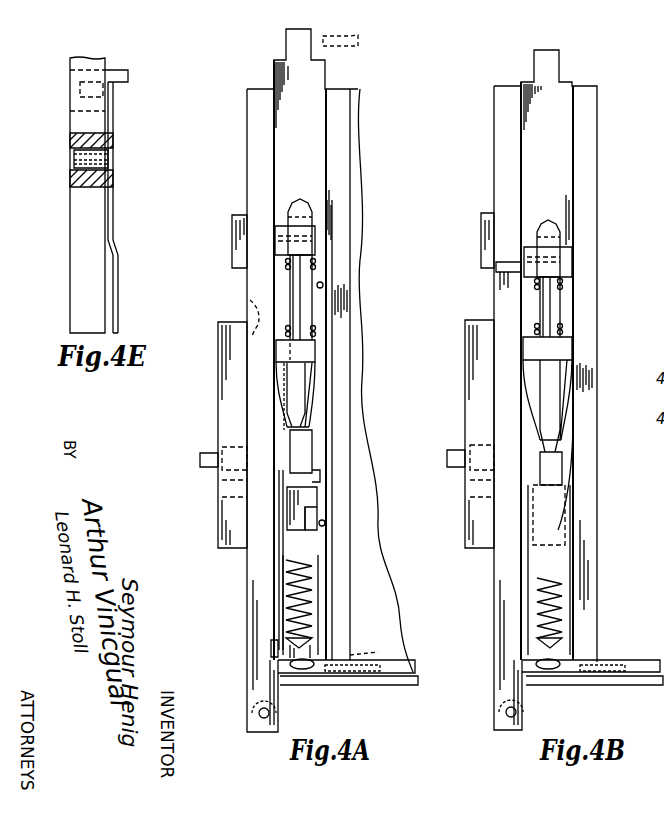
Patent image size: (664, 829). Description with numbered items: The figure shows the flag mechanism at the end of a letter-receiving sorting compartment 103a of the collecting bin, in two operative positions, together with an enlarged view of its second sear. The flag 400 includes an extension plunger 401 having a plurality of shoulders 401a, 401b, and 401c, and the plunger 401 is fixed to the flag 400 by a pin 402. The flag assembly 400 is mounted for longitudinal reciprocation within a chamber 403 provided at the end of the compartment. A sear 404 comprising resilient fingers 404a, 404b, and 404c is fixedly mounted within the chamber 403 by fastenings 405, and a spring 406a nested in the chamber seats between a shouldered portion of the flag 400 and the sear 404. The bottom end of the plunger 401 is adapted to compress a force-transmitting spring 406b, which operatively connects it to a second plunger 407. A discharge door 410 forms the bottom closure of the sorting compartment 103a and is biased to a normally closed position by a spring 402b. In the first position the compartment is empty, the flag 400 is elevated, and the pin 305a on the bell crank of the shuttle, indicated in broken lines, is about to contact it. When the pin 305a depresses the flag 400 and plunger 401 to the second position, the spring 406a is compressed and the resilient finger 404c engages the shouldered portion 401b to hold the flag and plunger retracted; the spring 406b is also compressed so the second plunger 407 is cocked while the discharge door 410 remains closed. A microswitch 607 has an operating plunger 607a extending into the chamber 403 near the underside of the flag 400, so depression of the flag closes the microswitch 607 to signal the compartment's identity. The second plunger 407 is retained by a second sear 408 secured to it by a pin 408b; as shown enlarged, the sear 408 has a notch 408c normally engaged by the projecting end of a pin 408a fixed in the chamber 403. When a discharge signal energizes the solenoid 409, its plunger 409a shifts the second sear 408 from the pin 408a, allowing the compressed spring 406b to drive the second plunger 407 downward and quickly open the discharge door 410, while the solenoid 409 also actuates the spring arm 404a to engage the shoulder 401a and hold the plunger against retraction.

In FIG. 4A, the sorting compartment 103a is at (386, 604).
In FIG. 4A, the pin 305a is at (338, 36).
In FIG. 4A, the flag 400 is at (276, 68).
In FIG. 4B, the flag 400 is at (575, 82).
In FIG. 4A, the extension plunger 401 is at (290, 292).
In FIG. 4B, the extension plunger 401 is at (550, 307).
In FIG. 4A, the shoulder 401a is at (318, 427).
In FIG. 4A, the shouldered portion 401b is at (320, 478).
In FIG. 4B, the shouldered portion 401b is at (562, 505).
In FIG. 4B, the shoulder 401c is at (566, 528).
In FIG. 4A, the pin 402 is at (330, 222).
In FIG. 4B, the pin 402 is at (548, 248).
In FIG. 4A, the spring 402b is at (365, 665).
In FIG. 4A, the chamber 403 is at (324, 285).
In FIG. 4A, the sear 404 is at (320, 345).
In FIG. 4B, the sear 404 is at (547, 348).
In FIG. 4A, the spring arm 404a is at (282, 405).
In FIG. 4A, the resilient finger 404b is at (312, 395).
In FIG. 4B, the resilient finger 404b is at (547, 406).
In FIG. 4A, the resilient finger 404c is at (322, 510).
In FIG. 4A, the fastenings 405 is at (248, 310).
In FIG. 4A, the spring 406a is at (330, 262).
In FIG. 4B, the spring 406a is at (549, 307).
In FIG. 4A, the force-transmitting spring 406b is at (330, 585).
In FIG. 4A, the second plunger 407 is at (262, 650).
In FIG. 4B, the second plunger 407 is at (530, 648).
In FIG. 4E, the second sear 408 is at (115, 238).
In FIG. 4A, the second sear 408 is at (280, 555).
In FIG. 4E, the pin 408a is at (72, 156).
In FIG. 4B, the pin 408b is at (530, 606).
In FIG. 4E, the notch 408c is at (112, 160).
In FIG. 4A, the solenoid 409 is at (218, 500).
In FIG. 4B, the solenoid 409 is at (470, 434).
In FIG. 4E, the plunger 409a is at (118, 70).
In FIG. 4A, the discharge door 410 is at (345, 680).
In FIG. 4B, the discharge door 410 is at (603, 680).
In FIG. 4A, the microswitch 607 is at (232, 245).
In FIG. 4B, the microswitch 607 is at (481, 226).
In FIG. 4B, the operating plunger 607a is at (510, 272).